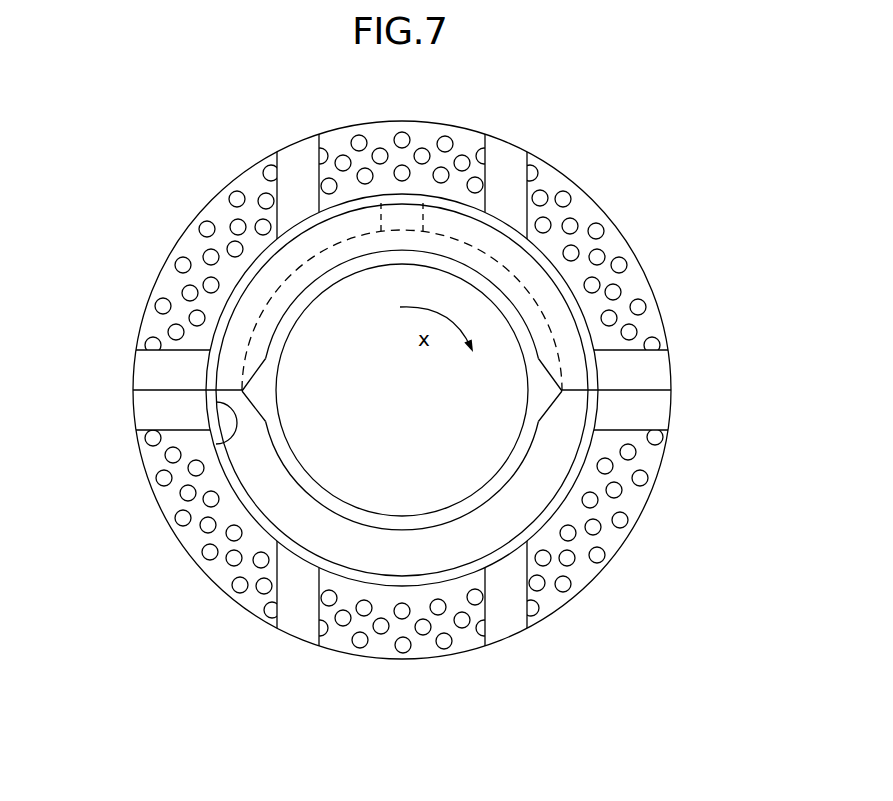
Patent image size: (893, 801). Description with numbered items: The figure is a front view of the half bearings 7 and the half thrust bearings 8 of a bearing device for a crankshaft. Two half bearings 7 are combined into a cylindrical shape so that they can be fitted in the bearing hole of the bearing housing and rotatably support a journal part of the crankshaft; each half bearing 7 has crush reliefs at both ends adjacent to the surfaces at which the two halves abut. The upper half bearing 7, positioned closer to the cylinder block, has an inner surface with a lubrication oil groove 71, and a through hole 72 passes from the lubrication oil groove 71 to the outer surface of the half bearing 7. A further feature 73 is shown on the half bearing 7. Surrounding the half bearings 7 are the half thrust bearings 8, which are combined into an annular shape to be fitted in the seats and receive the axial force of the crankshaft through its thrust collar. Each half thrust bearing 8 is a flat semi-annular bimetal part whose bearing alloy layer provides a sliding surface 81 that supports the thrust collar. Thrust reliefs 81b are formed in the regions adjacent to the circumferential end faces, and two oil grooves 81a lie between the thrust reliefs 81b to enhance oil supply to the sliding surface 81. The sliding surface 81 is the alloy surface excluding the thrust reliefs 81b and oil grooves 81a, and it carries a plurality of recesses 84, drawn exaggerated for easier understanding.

The half bearing 7 is at (264, 280).
The lubrication oil groove 71 is at (263, 327).
The through hole 72 is at (423, 226).
The pin hole 73 is at (236, 426).
The half thrust bearing 8 is at (578, 198).
The sliding surface 81 is at (610, 243).
The oil groove 81a is at (310, 150).
The thrust relief 81b is at (155, 373).
The recess 84 is at (235, 196).